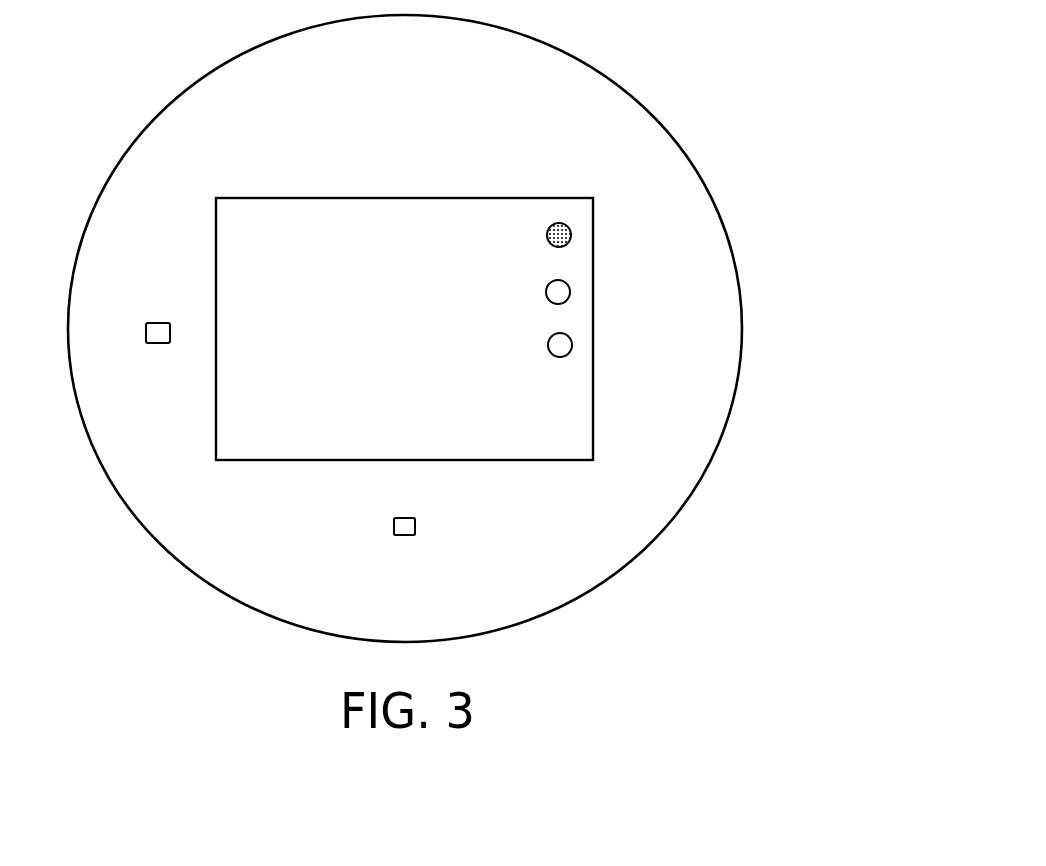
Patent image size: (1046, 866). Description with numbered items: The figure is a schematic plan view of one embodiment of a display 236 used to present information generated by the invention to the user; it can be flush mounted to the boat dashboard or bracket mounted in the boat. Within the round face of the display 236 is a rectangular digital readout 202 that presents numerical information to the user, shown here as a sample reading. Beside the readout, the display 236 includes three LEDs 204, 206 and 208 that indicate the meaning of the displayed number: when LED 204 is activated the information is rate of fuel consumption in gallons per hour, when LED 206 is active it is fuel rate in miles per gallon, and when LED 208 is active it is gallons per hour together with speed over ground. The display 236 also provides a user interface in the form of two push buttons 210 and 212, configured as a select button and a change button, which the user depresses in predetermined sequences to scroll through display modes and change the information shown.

The digital readout 202 is at (424, 211).
The LED 204 is at (554, 223).
The LED 206 is at (549, 301).
The LED 208 is at (557, 356).
The push button 210 is at (415, 525).
The push button 212 is at (157, 331).
The display 236 is at (636, 97).